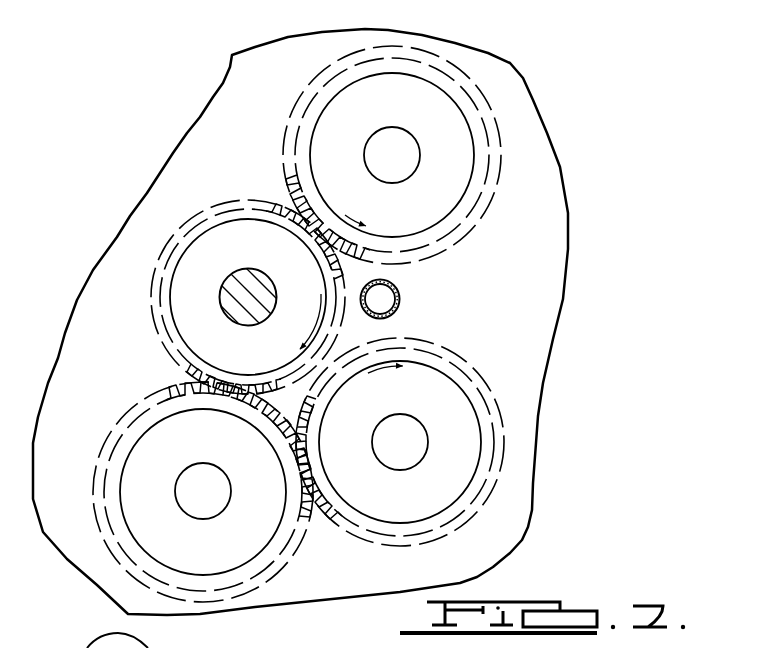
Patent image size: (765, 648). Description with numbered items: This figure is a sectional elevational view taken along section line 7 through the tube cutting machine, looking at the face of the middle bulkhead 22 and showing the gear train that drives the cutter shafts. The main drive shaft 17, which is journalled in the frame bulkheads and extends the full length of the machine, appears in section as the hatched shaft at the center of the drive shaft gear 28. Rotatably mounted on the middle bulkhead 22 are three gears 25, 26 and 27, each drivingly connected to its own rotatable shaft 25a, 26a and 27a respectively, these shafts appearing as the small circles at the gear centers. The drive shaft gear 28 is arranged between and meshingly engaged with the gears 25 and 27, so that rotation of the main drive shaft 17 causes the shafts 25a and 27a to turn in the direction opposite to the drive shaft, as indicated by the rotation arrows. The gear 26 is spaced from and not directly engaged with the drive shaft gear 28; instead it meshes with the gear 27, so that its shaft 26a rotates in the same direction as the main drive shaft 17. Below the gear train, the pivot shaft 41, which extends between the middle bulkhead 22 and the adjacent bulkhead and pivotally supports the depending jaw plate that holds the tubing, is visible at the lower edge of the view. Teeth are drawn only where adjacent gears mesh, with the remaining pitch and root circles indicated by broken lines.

The section line 7— 7 is at (402, 295).
The main drive shaft 17 is at (240, 269).
The middle bulkhead 22 is at (550, 187).
The gear 25 is at (411, 152).
The rotatable shaft 25a is at (388, 128).
The gear 26 is at (400, 436).
The rotatable shaft 26a is at (398, 398).
The gear 27 is at (181, 492).
The rotatable shaft 27a is at (201, 463).
The drive shaft gear 28 is at (217, 297).
The pivot shaft 41 is at (138, 637).